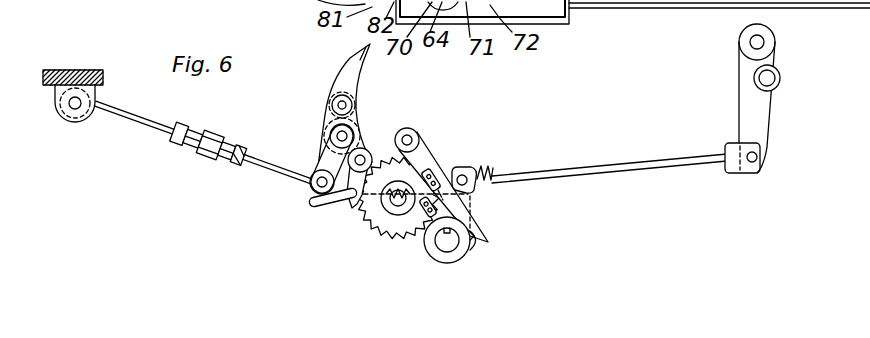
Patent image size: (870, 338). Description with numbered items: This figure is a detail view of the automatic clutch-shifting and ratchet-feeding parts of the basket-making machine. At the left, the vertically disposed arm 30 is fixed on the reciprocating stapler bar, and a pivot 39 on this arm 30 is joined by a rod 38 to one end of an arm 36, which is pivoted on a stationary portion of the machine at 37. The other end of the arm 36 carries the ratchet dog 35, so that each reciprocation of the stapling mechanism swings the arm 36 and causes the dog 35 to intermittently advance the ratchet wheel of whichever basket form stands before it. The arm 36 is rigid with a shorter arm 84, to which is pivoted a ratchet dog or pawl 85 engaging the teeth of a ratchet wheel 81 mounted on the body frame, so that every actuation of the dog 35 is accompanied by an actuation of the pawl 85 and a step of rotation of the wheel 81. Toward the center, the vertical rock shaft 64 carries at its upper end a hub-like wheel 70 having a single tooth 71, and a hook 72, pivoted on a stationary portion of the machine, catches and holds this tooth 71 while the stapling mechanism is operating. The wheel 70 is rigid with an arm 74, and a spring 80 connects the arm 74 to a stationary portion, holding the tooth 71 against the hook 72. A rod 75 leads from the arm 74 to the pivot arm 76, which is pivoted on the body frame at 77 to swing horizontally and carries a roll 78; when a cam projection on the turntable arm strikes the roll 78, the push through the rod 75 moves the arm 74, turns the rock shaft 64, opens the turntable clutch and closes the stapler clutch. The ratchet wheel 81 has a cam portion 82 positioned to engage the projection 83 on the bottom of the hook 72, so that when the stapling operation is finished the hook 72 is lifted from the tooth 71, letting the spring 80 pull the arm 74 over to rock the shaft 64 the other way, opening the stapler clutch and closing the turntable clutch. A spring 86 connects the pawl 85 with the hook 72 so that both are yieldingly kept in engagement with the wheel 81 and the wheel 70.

The vertically disposed arm 30 is at (60, 70).
The pivot 39 is at (75, 105).
The rod 38 is at (163, 132).
The ratchet dog 35 is at (352, 62).
The arm 36 is at (318, 157).
The stationary pivot 37 is at (348, 123).
The shorter arm 84 is at (367, 143).
The projection 83 is at (443, 171).
The cam portion 82 is at (425, 219).
The ratchet wheel 81 is at (387, 221).
The spring 86 is at (376, 197).
The ratchet dog or pawl 85 is at (347, 209).
The arm 74 is at (472, 197).
The spring 80 is at (490, 167).
The wheel 70 is at (452, 258).
The vertical rock shaft 64 is at (445, 251).
The single tooth 71 is at (473, 248).
The hook 72 is at (476, 233).
The rod 75 is at (608, 168).
The pivot arm 76 is at (748, 105).
The pivot 77 is at (760, 42).
The roll 78 is at (780, 80).